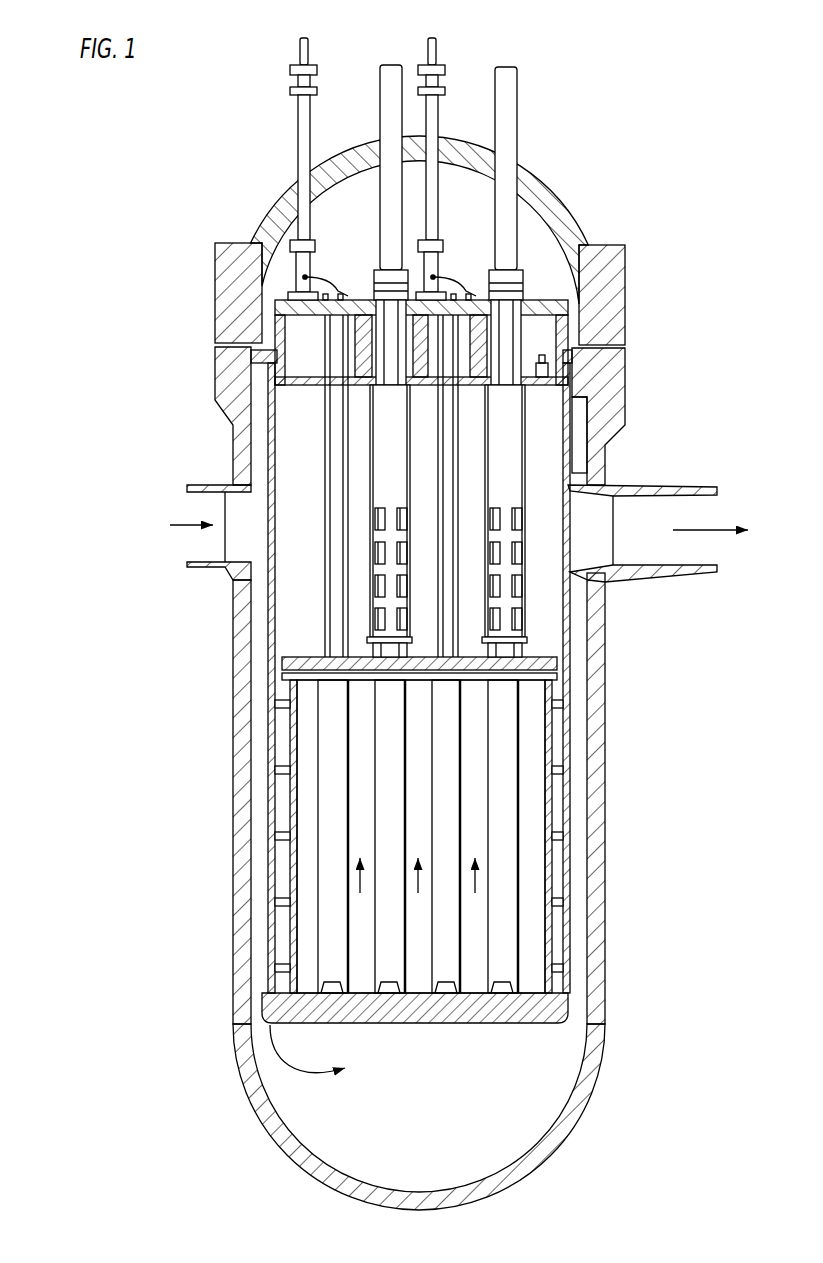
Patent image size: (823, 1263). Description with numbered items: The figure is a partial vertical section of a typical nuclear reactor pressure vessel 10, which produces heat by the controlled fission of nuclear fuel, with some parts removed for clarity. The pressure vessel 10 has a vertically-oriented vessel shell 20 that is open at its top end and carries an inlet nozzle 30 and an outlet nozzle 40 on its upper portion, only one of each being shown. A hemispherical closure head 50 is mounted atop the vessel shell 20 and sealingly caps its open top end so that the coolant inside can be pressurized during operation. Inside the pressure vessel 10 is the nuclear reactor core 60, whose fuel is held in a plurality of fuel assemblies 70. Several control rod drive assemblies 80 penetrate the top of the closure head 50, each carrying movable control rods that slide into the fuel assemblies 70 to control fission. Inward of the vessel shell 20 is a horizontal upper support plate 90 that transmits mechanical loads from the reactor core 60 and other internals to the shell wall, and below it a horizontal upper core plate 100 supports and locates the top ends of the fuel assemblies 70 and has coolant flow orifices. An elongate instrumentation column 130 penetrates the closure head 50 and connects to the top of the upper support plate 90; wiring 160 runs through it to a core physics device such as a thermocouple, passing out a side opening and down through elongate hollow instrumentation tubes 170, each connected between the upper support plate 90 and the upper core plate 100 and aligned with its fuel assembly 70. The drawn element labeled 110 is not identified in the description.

The nuclear reactor pressure vessel 10 is at (384, 624).
The vessel shell 20 is at (597, 459).
The inlet nozzle 30 is at (207, 568).
The outlet nozzle 40 is at (618, 575).
The closure head 50 is at (543, 201).
The nuclear reactor core 60 is at (528, 802).
The fuel assembly 70 is at (453, 947).
The control rod drive assembly 80 is at (505, 118).
The upper support plate 90 is at (557, 308).
The upper core plate 100 is at (545, 662).
The core barrel 110 is at (283, 677).
The instrumentation column 130 is at (283, 143).
The wiring 160 is at (333, 284).
The instrumentation tube 170 is at (323, 478).